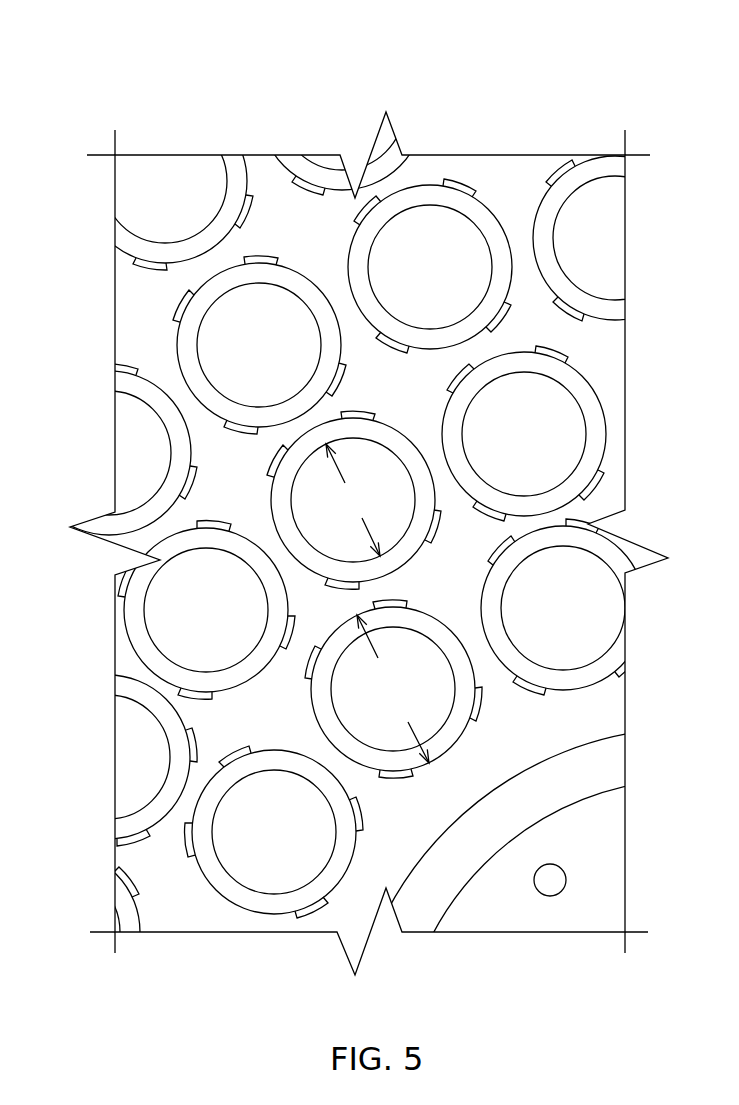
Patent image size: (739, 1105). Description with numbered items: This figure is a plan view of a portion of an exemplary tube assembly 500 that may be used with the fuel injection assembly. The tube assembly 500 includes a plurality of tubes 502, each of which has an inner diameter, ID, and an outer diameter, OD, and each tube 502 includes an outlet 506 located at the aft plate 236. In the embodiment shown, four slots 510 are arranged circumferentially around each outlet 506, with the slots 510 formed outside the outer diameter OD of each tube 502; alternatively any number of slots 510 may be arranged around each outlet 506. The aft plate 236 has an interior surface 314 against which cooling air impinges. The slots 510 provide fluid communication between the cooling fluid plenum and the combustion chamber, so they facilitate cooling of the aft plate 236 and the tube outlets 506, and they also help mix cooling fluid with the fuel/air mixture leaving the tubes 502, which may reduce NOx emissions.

The tube assembly 500 is at (565, 48).
The aft plate 236 is at (327, 239).
The tube 502 is at (490, 222).
The outlet 506 is at (440, 230).
The slot 510 is at (273, 257).
The interior surface 314 is at (590, 712).